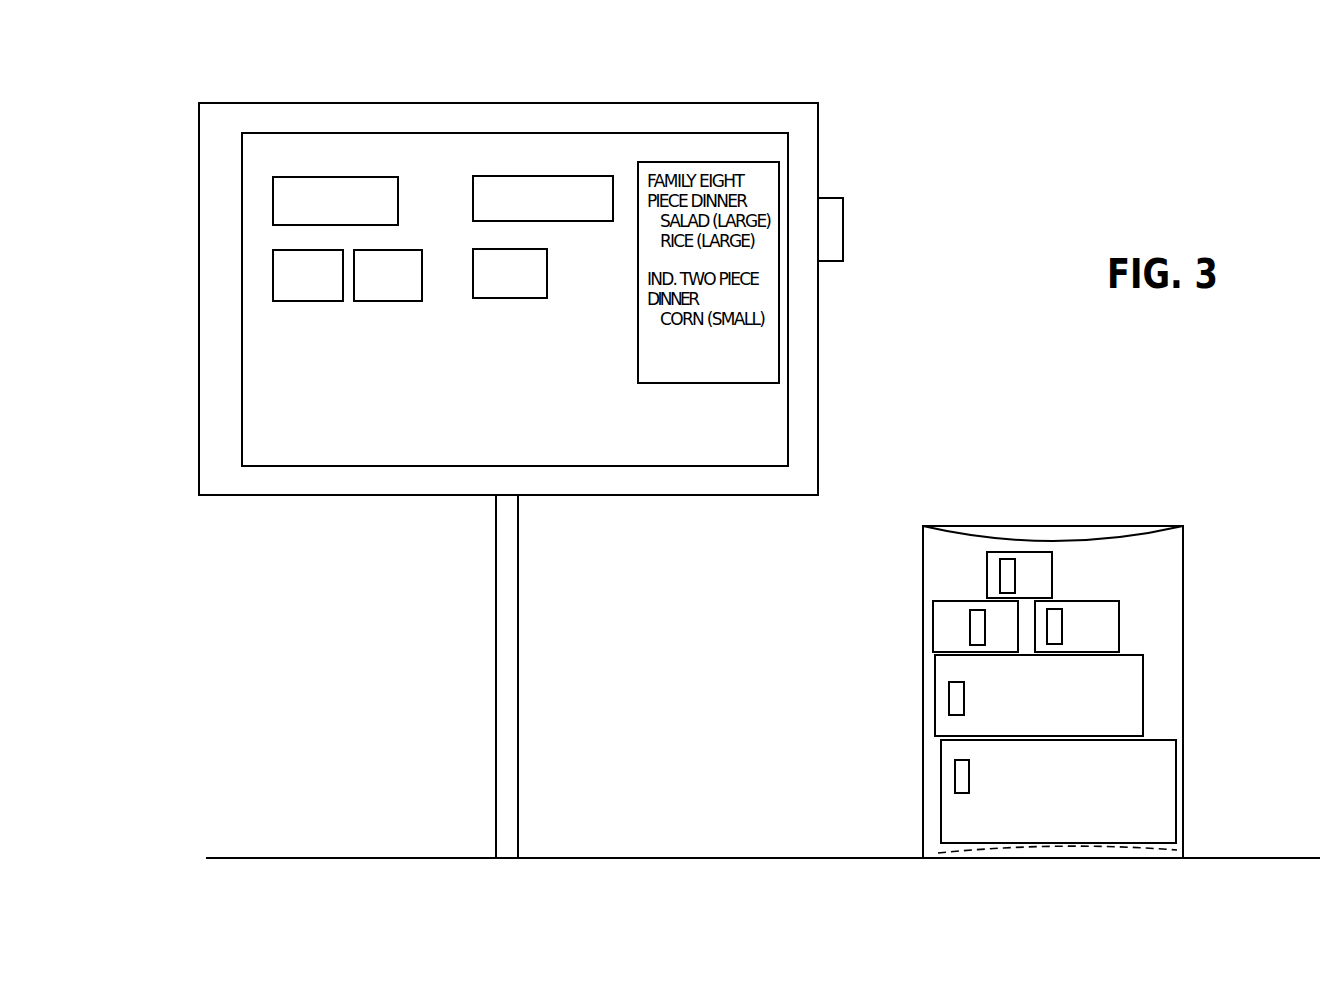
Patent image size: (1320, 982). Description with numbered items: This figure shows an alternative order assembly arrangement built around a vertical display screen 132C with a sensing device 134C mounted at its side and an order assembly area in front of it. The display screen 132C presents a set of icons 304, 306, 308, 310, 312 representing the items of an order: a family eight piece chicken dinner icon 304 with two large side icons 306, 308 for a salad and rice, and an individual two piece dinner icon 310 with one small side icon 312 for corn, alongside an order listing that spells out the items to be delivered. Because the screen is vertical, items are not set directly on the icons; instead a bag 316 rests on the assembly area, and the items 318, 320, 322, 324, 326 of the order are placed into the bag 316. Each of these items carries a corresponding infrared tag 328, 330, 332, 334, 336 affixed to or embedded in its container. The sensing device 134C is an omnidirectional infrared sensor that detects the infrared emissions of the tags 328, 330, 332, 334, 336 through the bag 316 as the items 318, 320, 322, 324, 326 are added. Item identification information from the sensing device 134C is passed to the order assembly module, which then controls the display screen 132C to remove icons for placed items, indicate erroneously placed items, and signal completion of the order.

The display screen 132C is at (353, 495).
The sensing device 134C is at (843, 232).
The icon 304 is at (342, 176).
The icon 306 is at (297, 301).
The icon 308 is at (393, 301).
The icon 310 is at (518, 176).
The icon 312 is at (523, 298).
The bag 316 is at (1183, 605).
The item 318 is at (1160, 738).
The item 320 is at (1143, 687).
The item 322 is at (954, 599).
The item 324 is at (1123, 606).
The item 326 is at (1053, 567).
The tag 328 is at (969, 777).
The tag 330 is at (964, 702).
The tag 332 is at (970, 632).
The tag 334 is at (1062, 629).
The tag 336 is at (1010, 559).